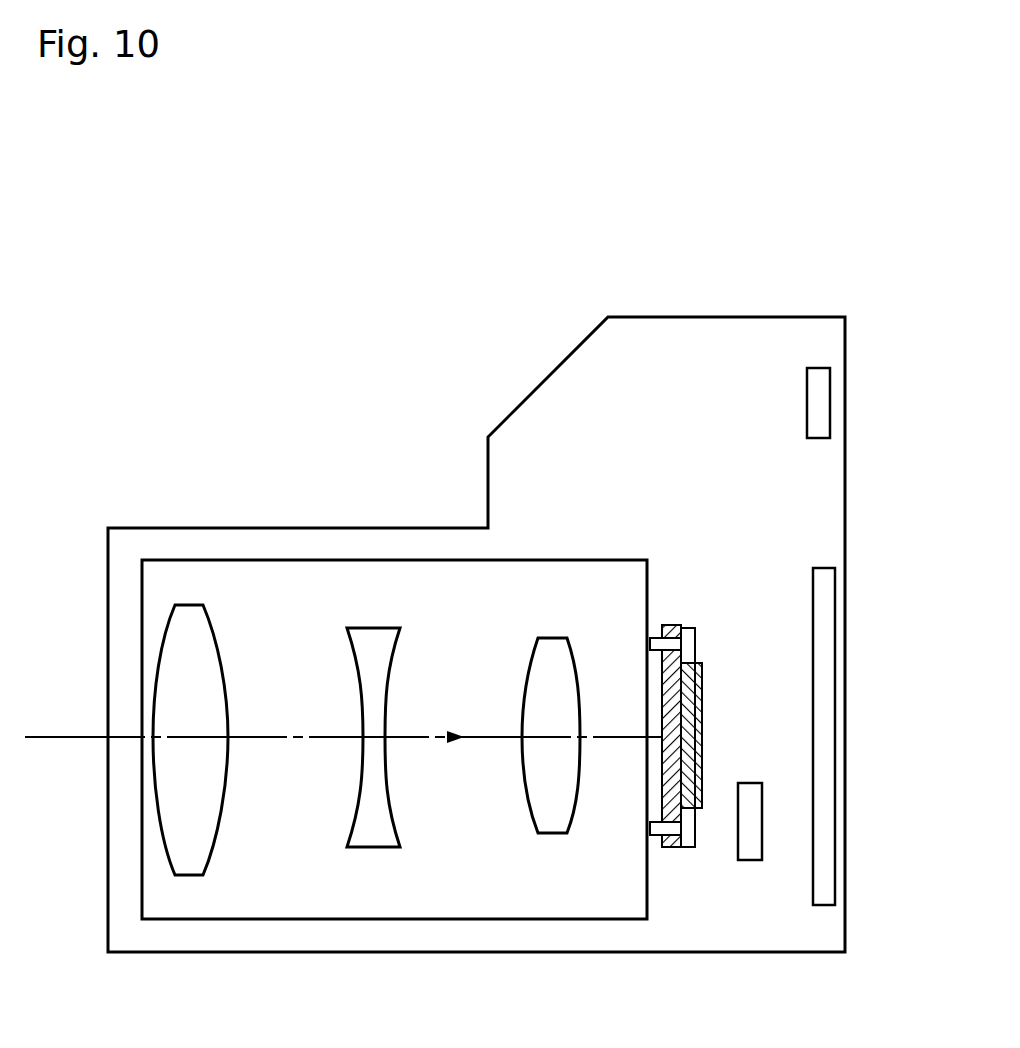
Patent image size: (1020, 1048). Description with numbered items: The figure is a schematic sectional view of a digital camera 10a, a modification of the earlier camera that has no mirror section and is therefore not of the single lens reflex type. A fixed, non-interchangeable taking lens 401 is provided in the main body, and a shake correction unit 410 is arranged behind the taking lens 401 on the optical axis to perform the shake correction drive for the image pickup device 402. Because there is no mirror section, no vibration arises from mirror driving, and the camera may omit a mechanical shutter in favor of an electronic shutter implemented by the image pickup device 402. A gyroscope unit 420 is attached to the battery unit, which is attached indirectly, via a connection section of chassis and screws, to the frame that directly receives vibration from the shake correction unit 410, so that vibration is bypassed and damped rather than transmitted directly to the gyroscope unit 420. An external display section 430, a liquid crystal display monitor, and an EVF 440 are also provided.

The digital camera 10a is at (706, 301).
The taking lens 401 is at (297, 893).
The image pickup device 402 is at (702, 693).
The shake correction unit 410 is at (686, 602).
The gyroscope unit 420 is at (750, 850).
The external display section 430 is at (823, 680).
The EVF 440 is at (818, 415).